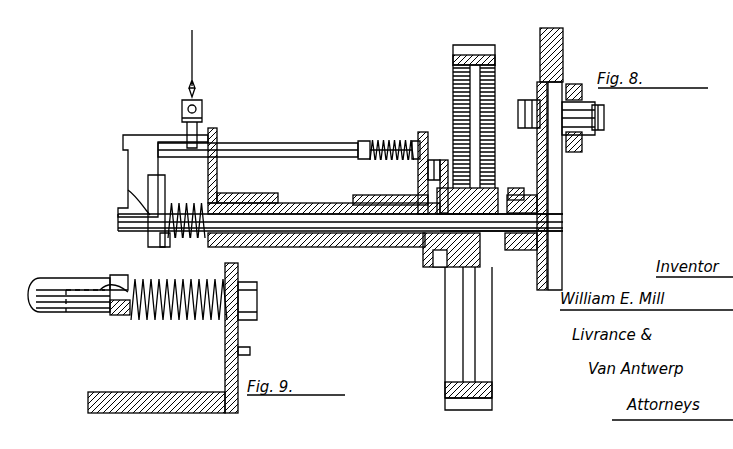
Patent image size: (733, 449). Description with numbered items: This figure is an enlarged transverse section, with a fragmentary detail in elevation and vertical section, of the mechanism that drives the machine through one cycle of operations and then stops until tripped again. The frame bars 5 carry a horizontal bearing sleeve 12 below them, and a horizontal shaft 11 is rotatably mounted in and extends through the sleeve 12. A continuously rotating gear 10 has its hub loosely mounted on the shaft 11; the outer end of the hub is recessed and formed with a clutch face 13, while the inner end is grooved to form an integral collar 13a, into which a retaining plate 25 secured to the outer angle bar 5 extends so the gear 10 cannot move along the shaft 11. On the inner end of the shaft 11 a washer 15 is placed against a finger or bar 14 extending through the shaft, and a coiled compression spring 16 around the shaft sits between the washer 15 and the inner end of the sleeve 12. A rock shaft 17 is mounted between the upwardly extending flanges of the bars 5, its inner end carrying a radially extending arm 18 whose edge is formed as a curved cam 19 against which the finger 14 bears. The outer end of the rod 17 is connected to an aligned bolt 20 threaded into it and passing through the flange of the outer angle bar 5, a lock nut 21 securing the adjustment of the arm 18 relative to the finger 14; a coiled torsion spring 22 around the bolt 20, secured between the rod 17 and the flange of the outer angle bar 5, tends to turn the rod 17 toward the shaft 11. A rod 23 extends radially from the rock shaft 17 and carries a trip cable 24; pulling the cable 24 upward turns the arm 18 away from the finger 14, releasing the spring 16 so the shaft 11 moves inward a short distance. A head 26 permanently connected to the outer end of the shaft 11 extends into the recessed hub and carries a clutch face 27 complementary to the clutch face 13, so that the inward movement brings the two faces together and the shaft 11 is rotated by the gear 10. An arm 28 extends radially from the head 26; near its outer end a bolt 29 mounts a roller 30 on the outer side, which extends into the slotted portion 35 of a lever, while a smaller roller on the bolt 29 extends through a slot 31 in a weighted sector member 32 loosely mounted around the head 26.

In FIG. 8, the bars 5 is at (217, 186).
In FIG. 9, the bars 5 is at (245, 338).
In FIG. 8, the gear 10 is at (472, 56).
In FIG. 8, the horizontal shaft 11 is at (360, 226).
In FIG. 8, the horizontal bearing sleeve 12 is at (300, 248).
In FIG. 8, the clutch face 13 is at (492, 272).
In FIG. 8, the integral collar 13a is at (433, 250).
In FIG. 8, the finger or bar 14 is at (160, 186).
In FIG. 8, the washer 15 is at (166, 248).
In FIG. 8, the coiled compression spring 16 is at (197, 205).
In FIG. 8, the rock shaft 17 is at (277, 142).
In FIG. 9, the rock shaft 17 is at (44, 280).
In FIG. 8, the radially extending arm 18 is at (128, 162).
In FIG. 8, the curved cam 19 is at (145, 200).
In FIG. 8, the bolt 20 is at (382, 141).
In FIG. 9, the bolt 20 is at (175, 322).
In FIG. 8, the lock nut 21 is at (364, 141).
In FIG. 9, the lock nut 21 is at (114, 316).
In FIG. 8, the pin 22 is at (383, 160).
In FIG. 9, the pin 22 is at (205, 320).
In FIG. 8, the rod 23 is at (202, 120).
In FIG. 8, the trip cable 24 is at (193, 48).
In FIG. 8, the retaining plate 25 is at (445, 178).
In FIG. 8, the head 26 is at (563, 242).
In FIG. 8, the clutch face 27 is at (520, 176).
In FIG. 8, the arm 28 is at (563, 177).
In FIG. 8, the bolt 29 is at (606, 118).
In FIG. 8, the roller 30 is at (584, 134).
In FIG. 8, the slot 31 is at (540, 102).
In FIG. 8, the weighted sector member 32 is at (564, 46).
In FIG. 8, the slotted portion 35 is at (576, 90).